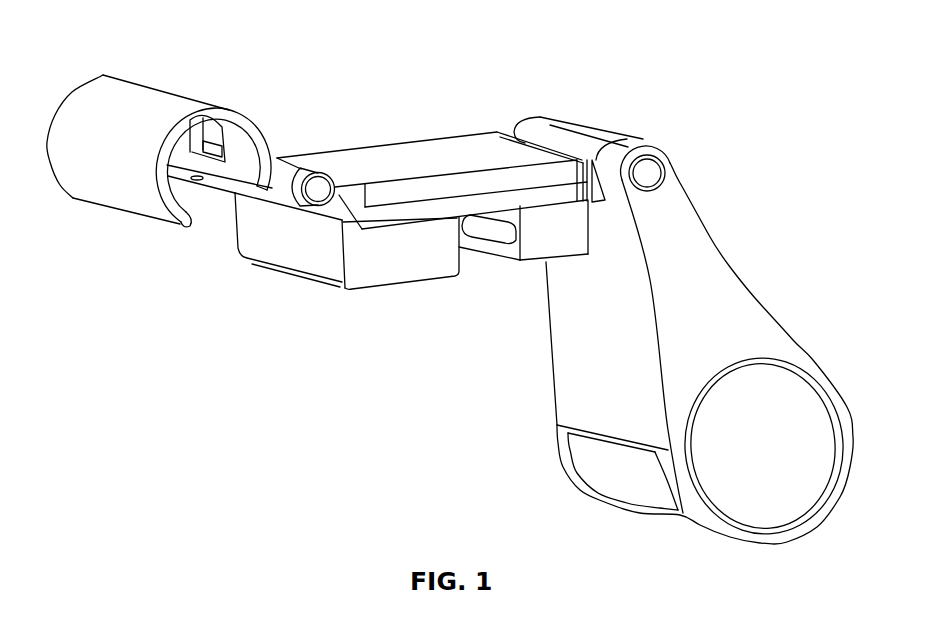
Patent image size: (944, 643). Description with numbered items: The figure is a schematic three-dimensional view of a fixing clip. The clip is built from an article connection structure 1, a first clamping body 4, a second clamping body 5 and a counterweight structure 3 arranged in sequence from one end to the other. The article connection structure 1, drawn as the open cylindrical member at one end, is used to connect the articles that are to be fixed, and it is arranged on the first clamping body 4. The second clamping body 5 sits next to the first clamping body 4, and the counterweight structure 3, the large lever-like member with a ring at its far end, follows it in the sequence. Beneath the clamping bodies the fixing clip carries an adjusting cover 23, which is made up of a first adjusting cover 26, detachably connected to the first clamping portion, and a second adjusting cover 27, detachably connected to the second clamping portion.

The article connection structure 1 is at (139, 112).
The counterweight structure 3 is at (682, 257).
The first clamping body 4 is at (458, 198).
The second clamping body 5 is at (582, 182).
The adjusting cover 23 is at (411, 320).
The first adjusting cover 26 is at (407, 261).
The second adjusting cover 27 is at (508, 286).